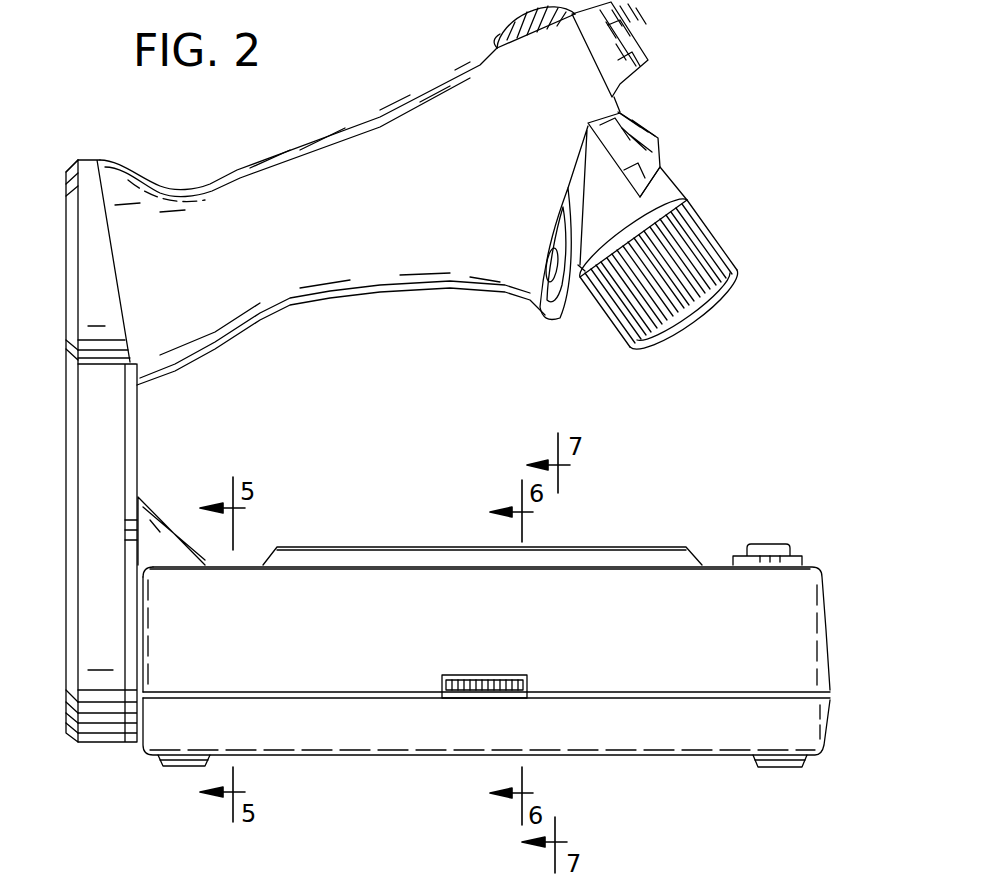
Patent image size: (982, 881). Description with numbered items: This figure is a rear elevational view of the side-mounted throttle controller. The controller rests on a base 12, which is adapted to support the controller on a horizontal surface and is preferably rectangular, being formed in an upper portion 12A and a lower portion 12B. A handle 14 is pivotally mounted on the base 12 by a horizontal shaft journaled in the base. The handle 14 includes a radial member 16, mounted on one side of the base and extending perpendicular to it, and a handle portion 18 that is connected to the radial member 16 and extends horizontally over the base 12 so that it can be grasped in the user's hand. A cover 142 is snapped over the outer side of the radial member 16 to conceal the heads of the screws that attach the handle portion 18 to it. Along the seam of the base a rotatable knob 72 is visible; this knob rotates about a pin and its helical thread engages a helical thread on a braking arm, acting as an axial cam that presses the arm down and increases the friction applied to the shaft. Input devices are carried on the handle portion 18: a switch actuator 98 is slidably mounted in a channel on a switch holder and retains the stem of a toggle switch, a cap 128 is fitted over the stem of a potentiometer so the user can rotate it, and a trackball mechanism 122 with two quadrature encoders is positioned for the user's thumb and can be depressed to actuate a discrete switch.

The base 12 is at (515, 621).
The upper portion of the base 12A is at (826, 653).
The lower portion of the base 12B is at (830, 717).
The handle 14 is at (344, 205).
The radial member 16 is at (137, 440).
The handle portion 18 is at (255, 172).
The rotatable knob 72 is at (482, 680).
The switch actuator 98 is at (640, 38).
The trackball mechanism 122 is at (563, 322).
The cap 128 is at (512, 18).
The cover 142 is at (68, 478).